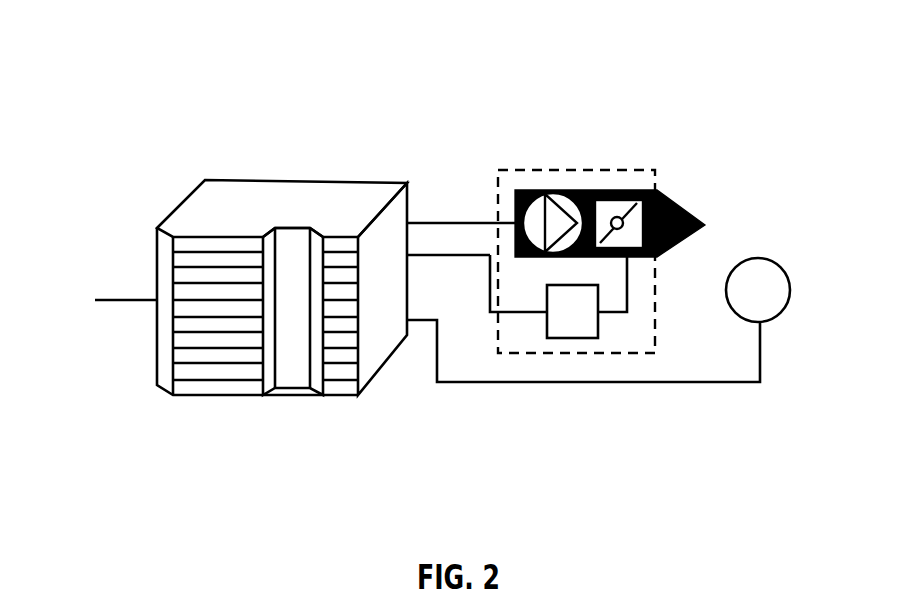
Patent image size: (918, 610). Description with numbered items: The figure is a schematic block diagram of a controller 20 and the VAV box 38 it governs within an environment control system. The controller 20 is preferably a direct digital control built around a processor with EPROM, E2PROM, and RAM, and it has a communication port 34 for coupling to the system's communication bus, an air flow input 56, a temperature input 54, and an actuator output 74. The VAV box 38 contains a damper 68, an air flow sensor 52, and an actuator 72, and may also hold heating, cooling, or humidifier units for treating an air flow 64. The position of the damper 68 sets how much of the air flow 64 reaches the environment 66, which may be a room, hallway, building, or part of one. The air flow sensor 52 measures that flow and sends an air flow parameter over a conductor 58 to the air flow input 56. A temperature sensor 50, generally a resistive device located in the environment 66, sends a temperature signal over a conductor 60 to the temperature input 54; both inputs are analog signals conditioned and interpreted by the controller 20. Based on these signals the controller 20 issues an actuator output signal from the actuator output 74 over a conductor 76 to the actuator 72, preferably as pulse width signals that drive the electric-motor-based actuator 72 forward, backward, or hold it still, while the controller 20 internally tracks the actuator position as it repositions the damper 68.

The controller 20 is at (327, 180).
The communication port 34 is at (152, 298).
The VAV box 38 is at (517, 168).
The temperature sensor 50 is at (787, 312).
The air flow sensor 52 is at (570, 192).
The temperature input 54 is at (415, 322).
The air flow input 56 is at (417, 221).
The conductor 58 is at (443, 253).
The conductor 60 is at (648, 384).
The air flow 64 is at (667, 193).
The environment 66 is at (770, 236).
The damper 68 is at (600, 191).
The actuator 72 is at (580, 339).
The actuator output 74 is at (409, 256).
The conductor 76 is at (448, 257).